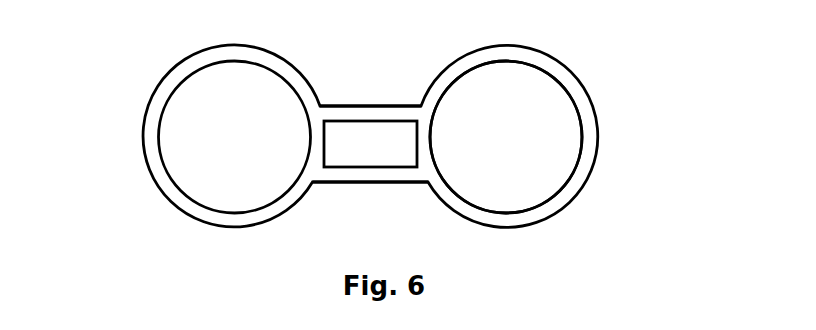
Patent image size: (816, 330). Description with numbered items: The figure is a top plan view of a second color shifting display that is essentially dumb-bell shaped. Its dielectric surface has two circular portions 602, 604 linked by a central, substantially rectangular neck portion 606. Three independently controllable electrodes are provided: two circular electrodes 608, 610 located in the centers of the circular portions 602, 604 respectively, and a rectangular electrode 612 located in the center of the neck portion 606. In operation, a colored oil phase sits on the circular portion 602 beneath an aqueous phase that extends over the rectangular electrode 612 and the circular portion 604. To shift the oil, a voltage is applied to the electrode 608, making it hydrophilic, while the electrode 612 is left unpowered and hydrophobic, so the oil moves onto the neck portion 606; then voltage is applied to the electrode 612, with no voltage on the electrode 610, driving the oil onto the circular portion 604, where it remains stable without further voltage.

The circular portion 602 is at (189, 58).
The circular portion 604 is at (570, 73).
The neck portion 606 is at (370, 105).
The circular electrode 608 is at (204, 149).
The circular electrode 610 is at (482, 149).
The rectangular electrode 612 is at (346, 155).